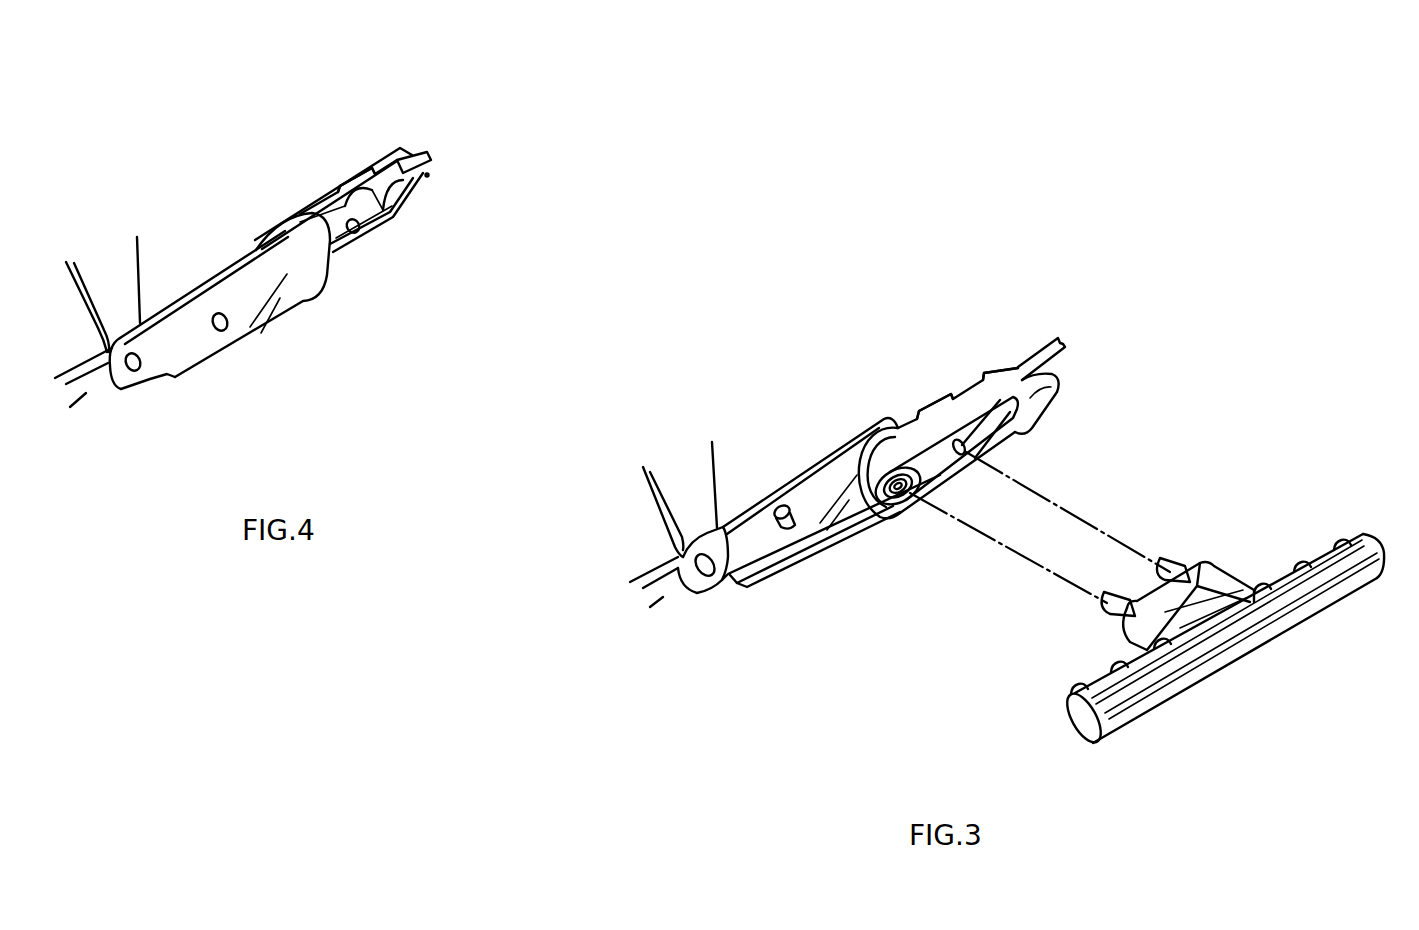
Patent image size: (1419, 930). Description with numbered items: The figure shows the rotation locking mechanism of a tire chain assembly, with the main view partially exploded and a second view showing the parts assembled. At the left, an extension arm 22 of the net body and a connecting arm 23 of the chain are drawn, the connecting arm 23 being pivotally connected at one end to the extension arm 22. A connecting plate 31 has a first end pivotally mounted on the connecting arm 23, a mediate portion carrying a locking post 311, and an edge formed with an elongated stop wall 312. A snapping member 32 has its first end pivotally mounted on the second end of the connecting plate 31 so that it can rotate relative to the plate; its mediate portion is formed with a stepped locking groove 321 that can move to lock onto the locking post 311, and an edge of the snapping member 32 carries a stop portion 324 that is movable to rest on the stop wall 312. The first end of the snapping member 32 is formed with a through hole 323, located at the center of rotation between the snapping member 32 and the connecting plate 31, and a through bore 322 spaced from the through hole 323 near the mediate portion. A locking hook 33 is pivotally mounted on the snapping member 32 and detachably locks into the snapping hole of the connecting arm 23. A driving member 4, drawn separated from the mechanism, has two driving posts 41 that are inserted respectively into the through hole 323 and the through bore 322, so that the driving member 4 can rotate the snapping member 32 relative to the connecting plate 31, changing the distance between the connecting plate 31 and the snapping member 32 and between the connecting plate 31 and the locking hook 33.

In FIG. 3, the driving member 4 is at (1243, 642).
In FIG. 4, the extension arm 22 is at (132, 269).
In FIG. 3, the extension arm 22 is at (667, 488).
In FIG. 4, the connecting arm 23 is at (83, 392).
In FIG. 3, the connecting arm 23 is at (660, 587).
In FIG. 4, the connecting plate 31 is at (190, 357).
In FIG. 3, the connecting plate 31 is at (842, 467).
In FIG. 4, the snapping member 32 is at (373, 170).
In FIG. 3, the snapping member 32 is at (977, 383).
In FIG. 4, the locking hook 33 is at (424, 175).
In FIG. 3, the locking hook 33 is at (1040, 387).
In FIG. 3, the driving post 41 is at (1173, 570).
In FIG. 3, the locking post 311 is at (797, 523).
In FIG. 3, the elongated stop wall 312 is at (763, 572).
In FIG. 4, the stepped locking groove 321 is at (397, 222).
In FIG. 3, the stepped locking groove 321 is at (933, 403).
In FIG. 4, the through bore 322 is at (360, 235).
In FIG. 3, the through bore 322 is at (967, 447).
In FIG. 3, the through hole 323 is at (907, 492).
In FIG. 3, the stop portion 324 is at (1012, 440).